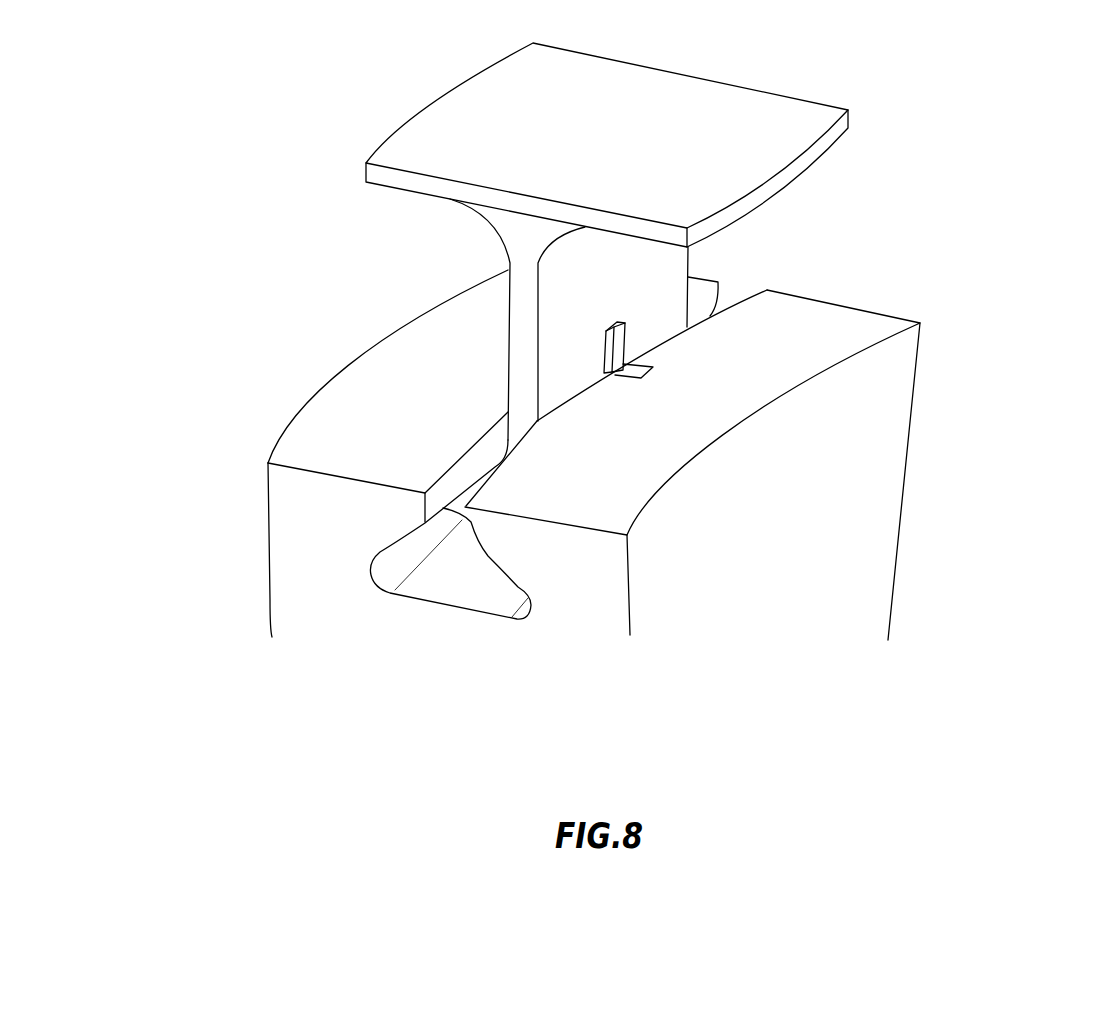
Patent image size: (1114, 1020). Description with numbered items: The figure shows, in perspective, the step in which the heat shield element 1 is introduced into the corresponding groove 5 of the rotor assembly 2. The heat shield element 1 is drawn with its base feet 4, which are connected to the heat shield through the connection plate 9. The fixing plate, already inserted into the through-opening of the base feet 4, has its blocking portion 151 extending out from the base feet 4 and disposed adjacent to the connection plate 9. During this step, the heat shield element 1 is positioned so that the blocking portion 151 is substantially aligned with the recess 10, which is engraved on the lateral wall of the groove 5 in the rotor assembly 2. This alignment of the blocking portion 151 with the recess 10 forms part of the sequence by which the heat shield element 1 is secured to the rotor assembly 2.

The heat shield element 1 is at (872, 147).
The rotor assembly 2 is at (789, 454).
The base feet 4 is at (465, 507).
The groove 5 is at (488, 556).
The connection plate 9 is at (518, 317).
The recess 10 is at (662, 368).
The blocking portion 151 is at (619, 337).